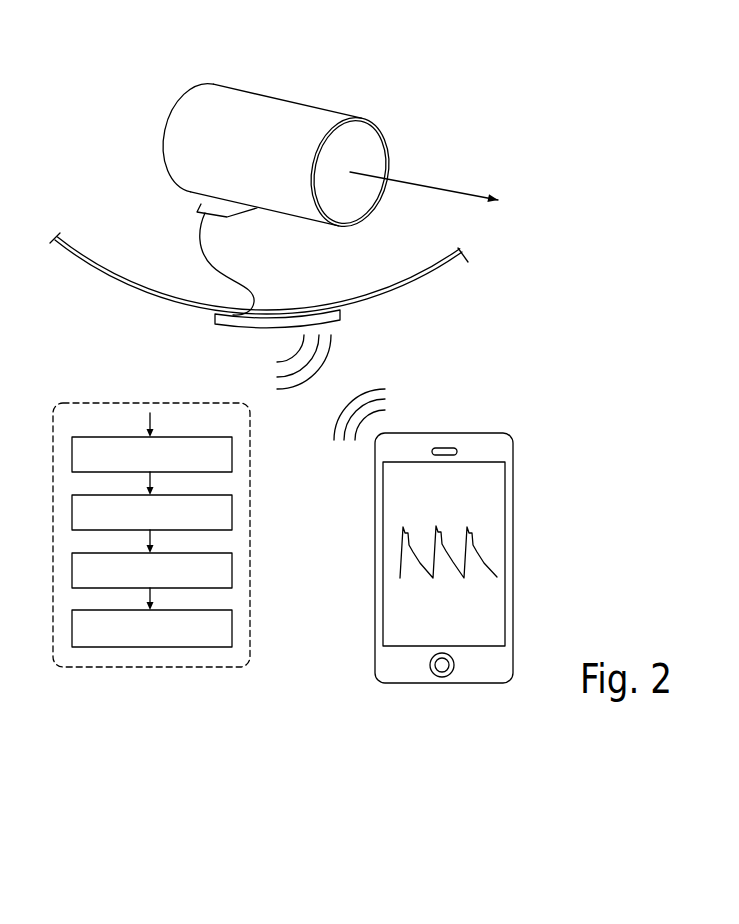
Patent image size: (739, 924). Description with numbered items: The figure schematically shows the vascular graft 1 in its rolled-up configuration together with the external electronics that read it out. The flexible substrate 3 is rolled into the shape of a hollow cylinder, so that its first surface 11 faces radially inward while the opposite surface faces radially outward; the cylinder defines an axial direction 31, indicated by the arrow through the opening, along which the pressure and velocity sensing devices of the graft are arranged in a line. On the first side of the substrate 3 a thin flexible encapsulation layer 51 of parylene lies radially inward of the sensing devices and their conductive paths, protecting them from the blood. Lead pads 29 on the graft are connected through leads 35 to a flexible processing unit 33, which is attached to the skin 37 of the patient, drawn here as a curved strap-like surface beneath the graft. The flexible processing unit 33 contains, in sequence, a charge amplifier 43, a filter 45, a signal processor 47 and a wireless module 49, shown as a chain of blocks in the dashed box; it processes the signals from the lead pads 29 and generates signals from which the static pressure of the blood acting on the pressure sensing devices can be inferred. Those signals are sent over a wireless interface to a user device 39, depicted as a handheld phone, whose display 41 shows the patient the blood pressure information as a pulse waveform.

The vascular graft 1 is at (331, 86).
The substrate 3 is at (260, 113).
The first surface 11 is at (366, 142).
The flexible encapsulation layer 51 is at (347, 227).
The axial direction 31 is at (470, 193).
The lead pads 29 is at (204, 207).
The leads 35 is at (201, 233).
The skin 37 is at (446, 265).
The flexible processing unit 33 is at (341, 316).
The user device 39 is at (490, 453).
The display 41 is at (490, 502).
The charge amplifier 43 is at (135, 469).
The filter 45 is at (135, 527).
The signal processor 47 is at (135, 584).
The wireless module 49 is at (135, 642).